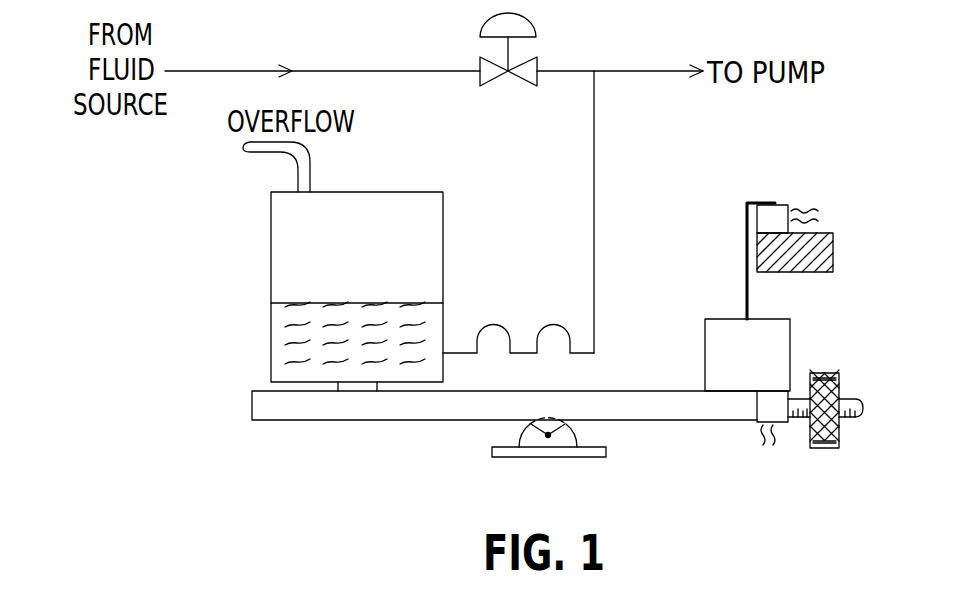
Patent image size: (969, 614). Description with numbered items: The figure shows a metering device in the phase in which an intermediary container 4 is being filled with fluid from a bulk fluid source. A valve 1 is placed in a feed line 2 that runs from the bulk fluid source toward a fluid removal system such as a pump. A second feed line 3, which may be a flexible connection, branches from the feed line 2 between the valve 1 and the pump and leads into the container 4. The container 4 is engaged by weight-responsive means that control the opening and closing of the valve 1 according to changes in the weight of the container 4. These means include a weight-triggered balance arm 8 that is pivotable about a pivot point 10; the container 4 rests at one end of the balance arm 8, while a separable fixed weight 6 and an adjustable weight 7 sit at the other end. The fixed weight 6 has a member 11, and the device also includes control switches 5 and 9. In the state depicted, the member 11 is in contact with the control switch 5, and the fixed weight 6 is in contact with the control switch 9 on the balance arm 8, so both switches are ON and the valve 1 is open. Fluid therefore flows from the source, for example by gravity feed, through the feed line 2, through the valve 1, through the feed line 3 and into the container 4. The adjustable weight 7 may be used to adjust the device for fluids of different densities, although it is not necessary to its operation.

The valve 1 is at (490, 80).
The feed line 2 is at (365, 70).
The feed line 3 is at (596, 180).
The intermediary container 4 is at (444, 233).
The control switch 5 is at (786, 205).
The fixed weight 6 is at (718, 347).
The adjustable weight 7 is at (825, 446).
The balance arm 8 is at (425, 415).
The control switch 9 is at (755, 408).
The pivot point 10 is at (548, 438).
The member 11 is at (745, 237).